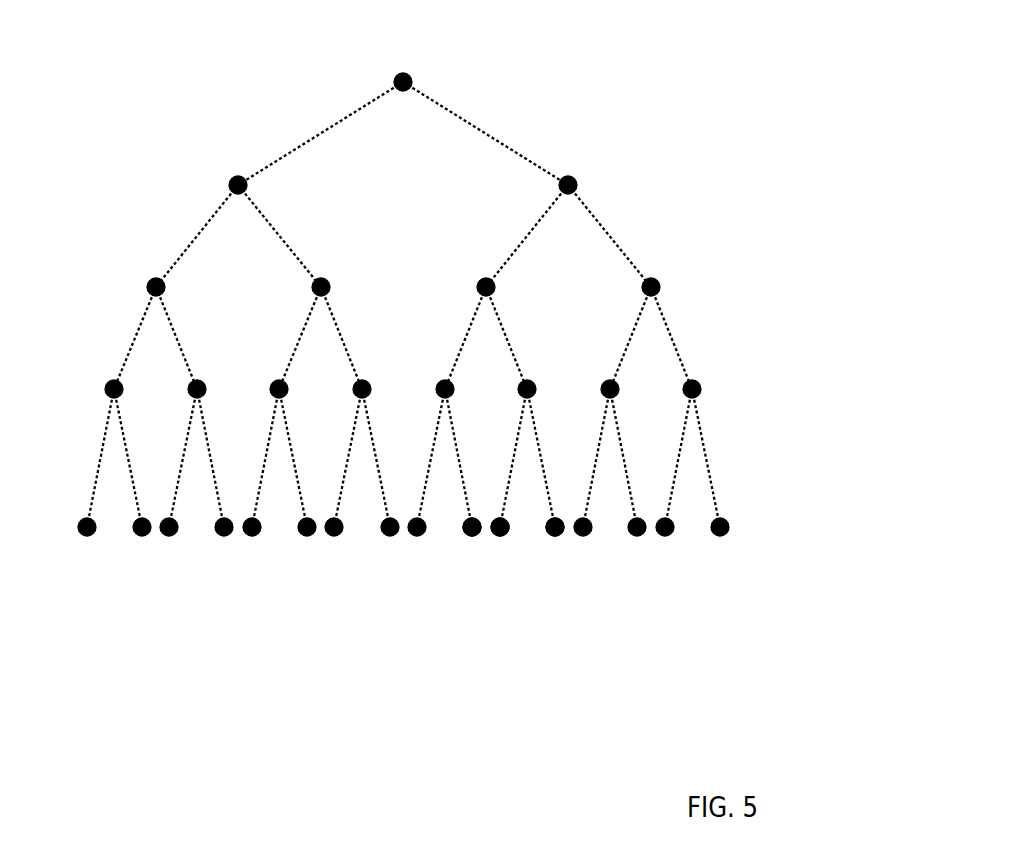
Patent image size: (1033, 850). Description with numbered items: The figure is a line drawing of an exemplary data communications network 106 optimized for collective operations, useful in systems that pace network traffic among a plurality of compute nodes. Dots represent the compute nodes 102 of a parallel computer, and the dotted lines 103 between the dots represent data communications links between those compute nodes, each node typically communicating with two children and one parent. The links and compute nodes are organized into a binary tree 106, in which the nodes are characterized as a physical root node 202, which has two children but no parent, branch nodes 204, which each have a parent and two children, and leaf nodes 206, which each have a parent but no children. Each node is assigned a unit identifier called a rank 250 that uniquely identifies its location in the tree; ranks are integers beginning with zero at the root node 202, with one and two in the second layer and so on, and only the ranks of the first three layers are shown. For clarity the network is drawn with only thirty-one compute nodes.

The compute nodes 102 is at (473, 535).
The dotted lines 103 is at (327, 128).
The data communications network optimized for collective operations 106 is at (431, 388).
The physical root node 202 is at (435, 66).
The branch nodes 204 is at (739, 136).
The leaf nodes 206 is at (739, 560).
The rank 250 is at (517, 196).